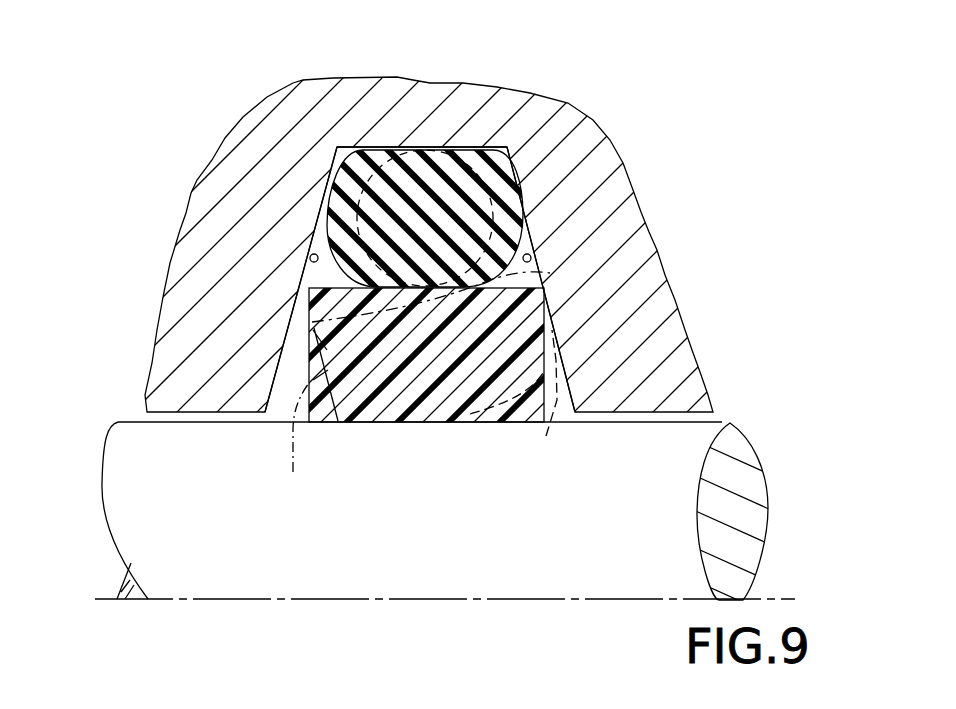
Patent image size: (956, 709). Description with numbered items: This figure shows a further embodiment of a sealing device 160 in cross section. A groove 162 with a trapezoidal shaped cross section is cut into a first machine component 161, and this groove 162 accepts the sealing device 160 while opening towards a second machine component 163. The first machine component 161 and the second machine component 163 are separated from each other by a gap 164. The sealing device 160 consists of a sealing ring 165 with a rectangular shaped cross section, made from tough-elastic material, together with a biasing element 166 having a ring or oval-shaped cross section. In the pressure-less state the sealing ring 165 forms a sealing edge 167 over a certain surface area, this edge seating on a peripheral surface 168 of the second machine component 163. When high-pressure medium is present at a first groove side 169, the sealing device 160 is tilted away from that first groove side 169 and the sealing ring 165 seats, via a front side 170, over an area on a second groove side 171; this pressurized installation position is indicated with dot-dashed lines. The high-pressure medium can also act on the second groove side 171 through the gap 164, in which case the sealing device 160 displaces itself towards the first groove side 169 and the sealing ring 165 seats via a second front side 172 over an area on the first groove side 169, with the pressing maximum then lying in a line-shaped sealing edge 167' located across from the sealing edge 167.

The sealing device 160 is at (729, 211).
The first machine component 161 is at (618, 226).
The groove 162 is at (344, 157).
The second machine component 163 is at (598, 513).
The gap 164 is at (719, 417).
The sealing ring 165 is at (483, 355).
The biasing element 166 is at (483, 200).
The sealing edge 167 is at (367, 433).
The line-shaped sealing edge 167' is at (513, 407).
The peripheral surface 168 is at (131, 421).
The first groove side 169 is at (310, 250).
The front side 170 is at (553, 322).
The second groove side 171 is at (530, 256).
The second front side 172 is at (286, 446).